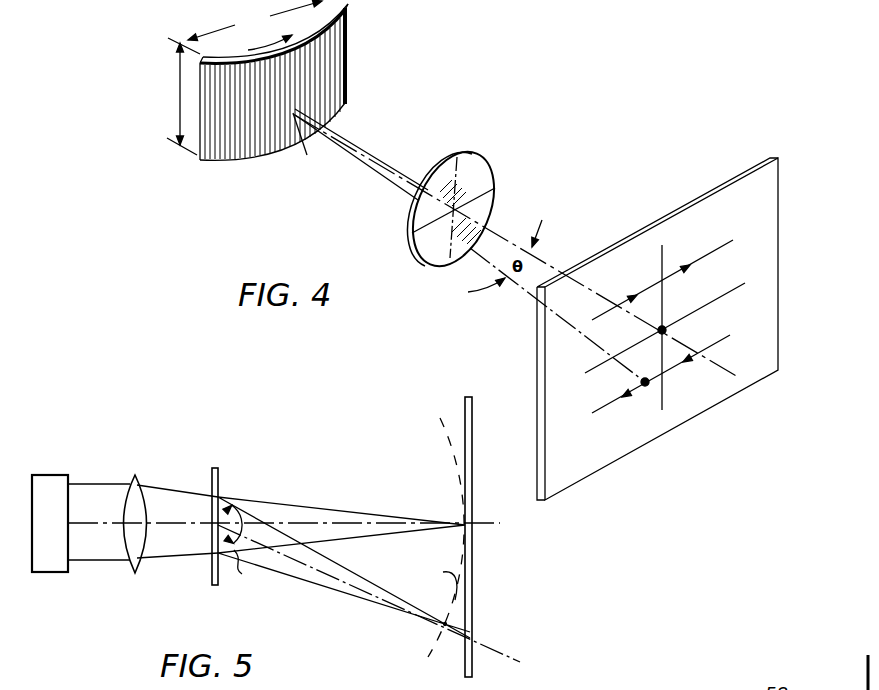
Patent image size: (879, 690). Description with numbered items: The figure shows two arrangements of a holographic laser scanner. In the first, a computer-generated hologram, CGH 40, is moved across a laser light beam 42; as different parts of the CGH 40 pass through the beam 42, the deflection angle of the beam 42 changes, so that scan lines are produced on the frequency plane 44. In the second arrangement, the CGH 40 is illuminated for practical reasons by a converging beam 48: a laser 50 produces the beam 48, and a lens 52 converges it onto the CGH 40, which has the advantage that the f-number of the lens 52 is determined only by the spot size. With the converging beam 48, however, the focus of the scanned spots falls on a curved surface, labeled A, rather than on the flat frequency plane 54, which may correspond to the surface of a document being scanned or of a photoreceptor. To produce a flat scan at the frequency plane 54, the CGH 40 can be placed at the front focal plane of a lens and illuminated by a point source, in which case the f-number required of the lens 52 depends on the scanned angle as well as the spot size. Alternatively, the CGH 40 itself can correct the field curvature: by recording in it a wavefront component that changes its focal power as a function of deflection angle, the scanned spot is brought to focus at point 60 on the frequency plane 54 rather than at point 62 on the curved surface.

In FIG. 4, the CGH 40 is at (348, 70).
In FIG. 5, the CGH 40 is at (223, 482).
In FIG. 4, the laser light beam 42 is at (381, 160).
In FIG. 4, the frequency plane 44 is at (778, 330).
In FIG. 5, the converging beam 48 is at (100, 483).
In FIG. 5, the laser 50 is at (58, 473).
In FIG. 5, the lens 52 is at (142, 475).
In FIG. 5, the frequency plane 54 is at (463, 673).
In FIG. 5, the point 60 is at (468, 635).
In FIG. 5, the point 62 is at (440, 625).